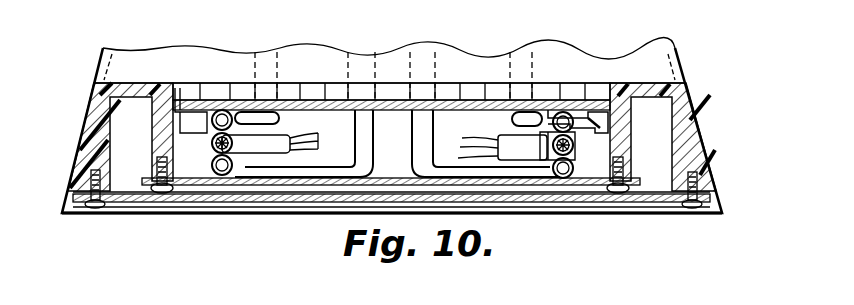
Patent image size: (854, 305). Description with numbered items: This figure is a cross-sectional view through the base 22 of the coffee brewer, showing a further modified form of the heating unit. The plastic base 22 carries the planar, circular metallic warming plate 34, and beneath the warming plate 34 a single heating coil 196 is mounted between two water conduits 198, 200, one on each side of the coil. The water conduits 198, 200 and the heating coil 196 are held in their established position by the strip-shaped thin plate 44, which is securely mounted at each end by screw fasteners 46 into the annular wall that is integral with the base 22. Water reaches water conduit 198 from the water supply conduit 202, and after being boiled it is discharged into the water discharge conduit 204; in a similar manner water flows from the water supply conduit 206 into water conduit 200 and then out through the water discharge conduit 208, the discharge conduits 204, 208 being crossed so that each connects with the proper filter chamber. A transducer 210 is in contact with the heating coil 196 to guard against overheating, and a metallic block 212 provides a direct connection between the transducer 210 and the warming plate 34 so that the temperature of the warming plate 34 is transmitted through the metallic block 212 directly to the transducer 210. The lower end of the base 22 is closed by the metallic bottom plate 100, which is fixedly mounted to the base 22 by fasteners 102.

The base 22 is at (700, 170).
The warming plate 34 is at (452, 102).
The thin plate 44 is at (326, 192).
The screw fasteners 46 is at (160, 214).
The bottom plate 100 is at (500, 206).
The fasteners 102 is at (98, 214).
The heating coil 196 is at (198, 150).
The water conduit 198 is at (222, 108).
The water conduit 200 is at (206, 178).
The water supply conduit 202 is at (272, 62).
The water discharge conduit 204 is at (520, 58).
The water supply conduit 206 is at (363, 60).
The water discharge conduit 208 is at (426, 52).
The transducer 210 is at (550, 208).
The metallic block 212 is at (553, 130).